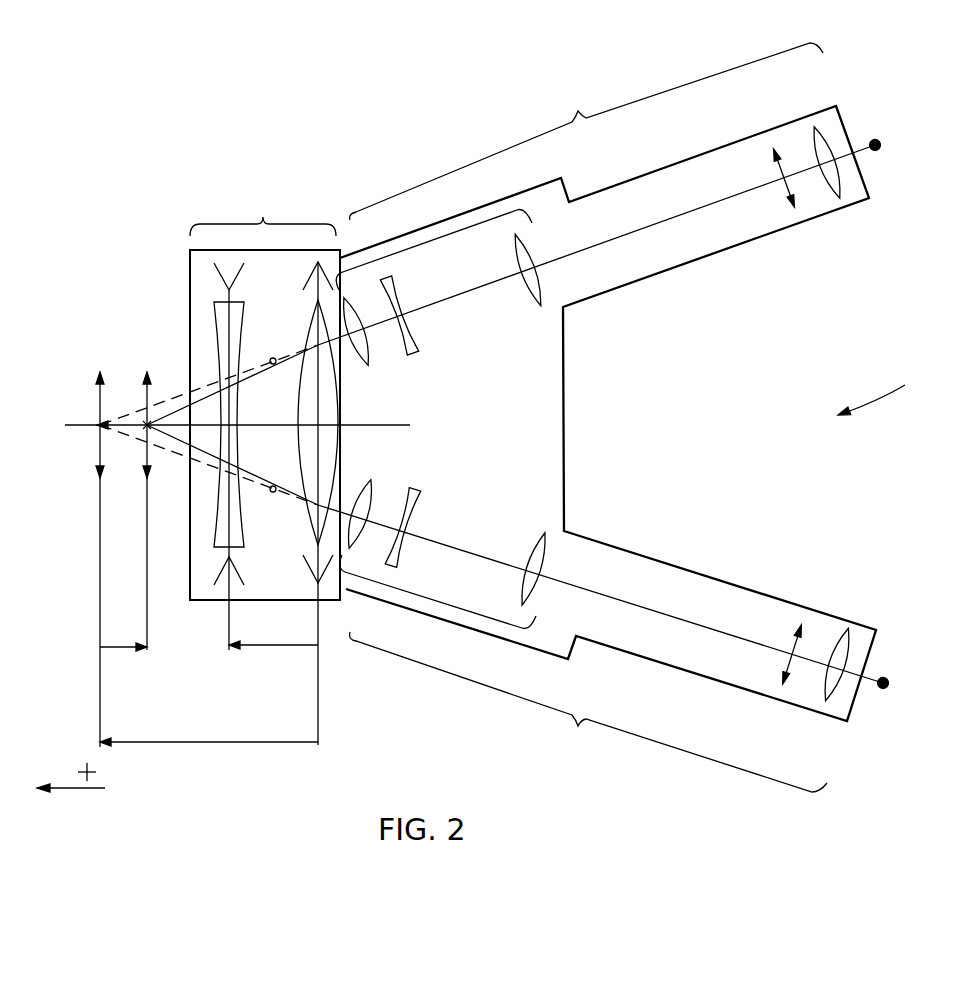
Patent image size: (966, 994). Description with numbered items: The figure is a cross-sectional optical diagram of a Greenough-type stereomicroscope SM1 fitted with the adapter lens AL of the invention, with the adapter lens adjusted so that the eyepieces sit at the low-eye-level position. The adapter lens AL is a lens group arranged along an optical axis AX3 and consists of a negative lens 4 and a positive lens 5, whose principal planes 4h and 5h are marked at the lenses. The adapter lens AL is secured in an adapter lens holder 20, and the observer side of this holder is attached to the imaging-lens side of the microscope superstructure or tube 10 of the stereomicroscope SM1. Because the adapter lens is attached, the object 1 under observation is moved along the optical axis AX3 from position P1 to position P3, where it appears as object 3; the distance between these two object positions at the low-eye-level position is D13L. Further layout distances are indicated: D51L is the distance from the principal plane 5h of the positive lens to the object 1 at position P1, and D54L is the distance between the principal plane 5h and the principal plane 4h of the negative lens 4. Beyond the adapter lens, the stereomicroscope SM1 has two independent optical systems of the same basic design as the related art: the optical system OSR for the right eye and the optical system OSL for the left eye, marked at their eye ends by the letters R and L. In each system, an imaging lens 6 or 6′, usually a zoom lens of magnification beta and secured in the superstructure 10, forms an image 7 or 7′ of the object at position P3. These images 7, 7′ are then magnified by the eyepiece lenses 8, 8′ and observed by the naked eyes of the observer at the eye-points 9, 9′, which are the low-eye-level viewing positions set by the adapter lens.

The object 1 is at (98, 395).
The object at position P3 3 is at (145, 396).
The negative lens 4 is at (213, 330).
The principal plane of negative lens 4h is at (212, 294).
The positive lens 5 is at (302, 333).
The principal plane of positive lens 5h is at (302, 298).
The imaging lens 6 is at (433, 603).
The imaging lens 6′ is at (425, 240).
The image 7 is at (787, 657).
The image 7′ is at (780, 165).
The eyepiece lens 8 is at (836, 700).
The eyepiece lens 8′ is at (826, 135).
The eye-point 9 is at (888, 680).
The eye-point 9′ is at (876, 140).
The microscope superstructure 10 is at (615, 185).
The adapter lens holder 20 is at (192, 258).
The position P1 is at (97, 427).
The position P3 is at (145, 428).
The optical axis AX3 is at (410, 425).
The adapter lens AL is at (263, 211).
The optical system for the right eye OSR is at (586, 131).
The optical system for the left eye OSL is at (588, 712).
The distance between object at P1 and object at P3 D13L is at (135, 667).
The distance between principal planes D54L is at (274, 632).
The distance between principal plane of positive lens and object at P1 D51L is at (209, 730).
The right eye R is at (890, 162).
The left eye L is at (895, 709).
The Greenough-type stereomicroscope SM1 is at (897, 387).